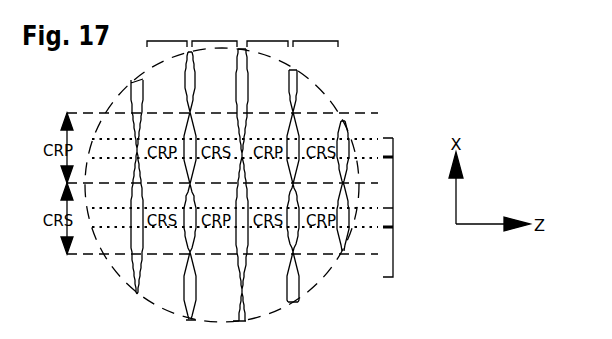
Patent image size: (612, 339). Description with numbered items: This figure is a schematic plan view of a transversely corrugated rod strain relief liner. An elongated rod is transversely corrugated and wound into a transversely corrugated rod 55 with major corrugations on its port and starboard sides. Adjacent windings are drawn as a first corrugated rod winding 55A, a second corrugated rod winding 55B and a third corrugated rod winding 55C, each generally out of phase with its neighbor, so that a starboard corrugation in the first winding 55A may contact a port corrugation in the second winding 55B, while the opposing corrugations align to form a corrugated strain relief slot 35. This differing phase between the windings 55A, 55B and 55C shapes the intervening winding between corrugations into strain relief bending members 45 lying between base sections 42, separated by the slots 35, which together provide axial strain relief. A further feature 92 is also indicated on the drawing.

The transversely corrugated rod 55 is at (155, 41).
The first corrugated rod winding 55A is at (200, 41).
The second corrugated rod winding 55B is at (259, 41).
The third corrugated rod winding 55C is at (304, 41).
The base section 42 is at (410, 214).
The strain relief bending member 45 is at (410, 245).
The corrugated strain relief slot 35 is at (237, 238).
The crossover 92 is at (243, 288).